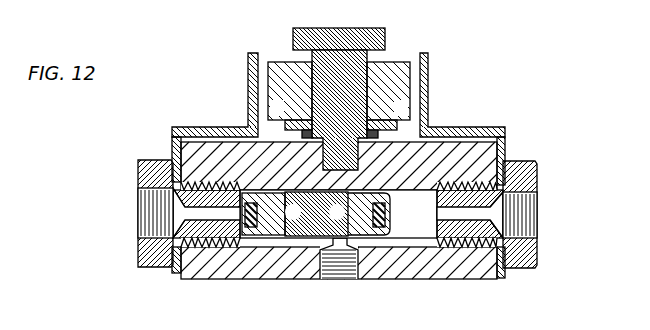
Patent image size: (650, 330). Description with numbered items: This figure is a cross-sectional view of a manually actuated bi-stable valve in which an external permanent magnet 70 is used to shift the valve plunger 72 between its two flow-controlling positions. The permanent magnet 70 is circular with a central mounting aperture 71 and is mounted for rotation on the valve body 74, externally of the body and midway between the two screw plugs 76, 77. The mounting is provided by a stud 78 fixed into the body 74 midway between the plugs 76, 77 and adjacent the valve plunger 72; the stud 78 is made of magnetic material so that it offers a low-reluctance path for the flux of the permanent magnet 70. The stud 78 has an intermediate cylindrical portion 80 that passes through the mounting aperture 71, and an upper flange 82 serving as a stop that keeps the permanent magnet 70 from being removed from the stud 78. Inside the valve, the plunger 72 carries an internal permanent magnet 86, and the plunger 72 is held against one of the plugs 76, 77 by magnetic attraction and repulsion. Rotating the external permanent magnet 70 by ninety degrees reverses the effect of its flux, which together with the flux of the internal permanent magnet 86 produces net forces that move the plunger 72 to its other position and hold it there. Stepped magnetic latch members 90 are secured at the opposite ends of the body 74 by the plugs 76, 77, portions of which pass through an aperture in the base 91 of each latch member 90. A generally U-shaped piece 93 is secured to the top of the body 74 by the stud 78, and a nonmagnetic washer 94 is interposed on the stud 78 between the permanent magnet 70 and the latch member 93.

The permanent magnet 70 is at (404, 58).
The central mounting aperture 71 is at (316, 89).
The valve plunger 72 is at (358, 200).
The valve body 74 is at (426, 279).
The screw plug 76 is at (138, 172).
The screw plug 77 is at (537, 175).
The stud 78 is at (349, 109).
The intermediate cylindrical portion 80 is at (367, 89).
The upper flange 82 is at (293, 36).
The internal permanent magnet 86 is at (315, 240).
The magnetic latch member 90 is at (248, 92).
The base 91 is at (183, 177).
The U-shaped piece 93 is at (306, 140).
The washer 94 is at (398, 124).